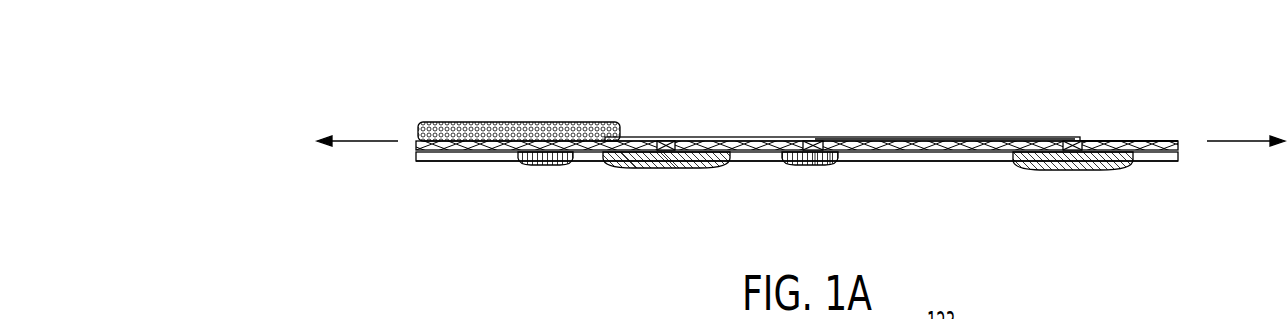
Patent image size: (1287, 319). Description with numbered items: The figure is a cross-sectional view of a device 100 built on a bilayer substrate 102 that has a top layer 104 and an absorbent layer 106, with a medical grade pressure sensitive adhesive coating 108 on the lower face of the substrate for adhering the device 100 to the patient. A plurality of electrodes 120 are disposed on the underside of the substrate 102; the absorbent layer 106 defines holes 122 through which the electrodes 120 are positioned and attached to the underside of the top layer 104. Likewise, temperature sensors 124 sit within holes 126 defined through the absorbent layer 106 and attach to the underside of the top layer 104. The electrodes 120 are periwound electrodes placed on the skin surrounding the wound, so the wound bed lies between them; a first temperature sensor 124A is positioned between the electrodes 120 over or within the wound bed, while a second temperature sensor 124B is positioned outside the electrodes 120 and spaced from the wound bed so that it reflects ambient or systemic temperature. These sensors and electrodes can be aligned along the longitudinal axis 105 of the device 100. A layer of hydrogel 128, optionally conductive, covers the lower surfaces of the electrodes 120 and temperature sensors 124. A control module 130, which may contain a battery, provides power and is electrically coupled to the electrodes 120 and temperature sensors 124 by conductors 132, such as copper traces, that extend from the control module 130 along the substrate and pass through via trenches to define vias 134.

The device 100 is at (275, 117).
The substrate 102 is at (1165, 141).
The top layer 104 is at (1150, 141).
The longitudinal axis 105 is at (370, 140).
The absorbent layer 106 is at (1181, 161).
The pressure sensitive adhesive coating 108 is at (1150, 161).
The electrodes 120 is at (680, 157).
The holes 122 is at (641, 171).
The temperature sensors 124 is at (786, 165).
The first temperature sensor 124A is at (817, 166).
The second temperature sensor 124B is at (546, 165).
The holes 126 is at (839, 171).
The hydrogel 128 is at (711, 169).
The control module 130 is at (575, 122).
The conductors 132 is at (753, 138).
The vias 134 is at (1075, 138).